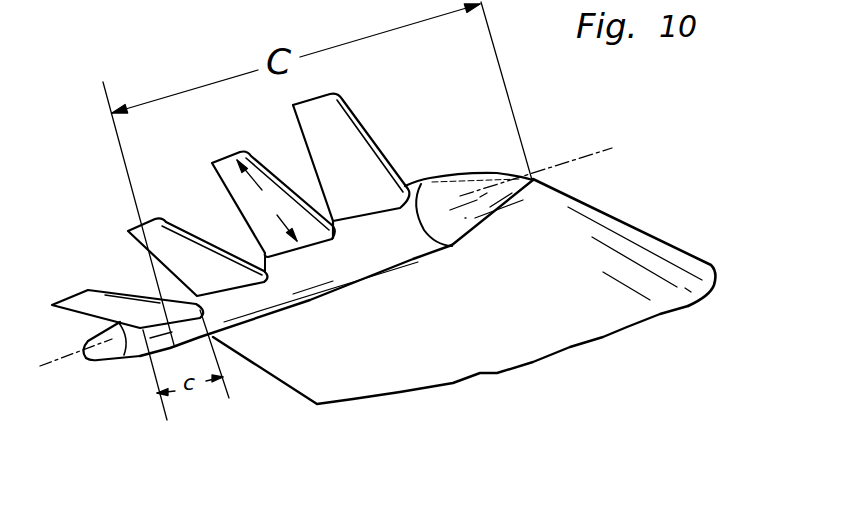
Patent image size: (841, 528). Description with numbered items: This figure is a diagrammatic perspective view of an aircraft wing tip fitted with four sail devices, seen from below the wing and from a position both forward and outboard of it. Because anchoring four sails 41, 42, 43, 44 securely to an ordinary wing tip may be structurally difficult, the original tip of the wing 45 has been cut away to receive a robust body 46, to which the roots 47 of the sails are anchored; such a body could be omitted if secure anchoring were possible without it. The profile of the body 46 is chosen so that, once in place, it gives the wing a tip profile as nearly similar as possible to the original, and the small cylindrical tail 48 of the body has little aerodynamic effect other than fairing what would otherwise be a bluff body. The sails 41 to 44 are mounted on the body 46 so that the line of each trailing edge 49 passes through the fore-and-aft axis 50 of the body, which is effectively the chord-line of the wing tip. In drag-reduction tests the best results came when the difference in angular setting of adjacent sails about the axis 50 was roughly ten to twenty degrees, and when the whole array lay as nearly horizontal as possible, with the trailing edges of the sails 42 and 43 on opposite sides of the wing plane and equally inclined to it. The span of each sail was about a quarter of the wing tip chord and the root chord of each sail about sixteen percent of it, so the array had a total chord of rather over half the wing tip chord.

The sail 41 is at (361, 124).
The sail 42 is at (280, 168).
The sail 43 is at (197, 230).
The sail 44 is at (130, 293).
The wing 45 is at (640, 212).
The body 46 is at (310, 298).
The root 47 is at (392, 205).
The cylindrical tail 48 is at (110, 353).
The trailing edge 49 is at (314, 157).
The fore-and-aft axis 50 is at (575, 159).